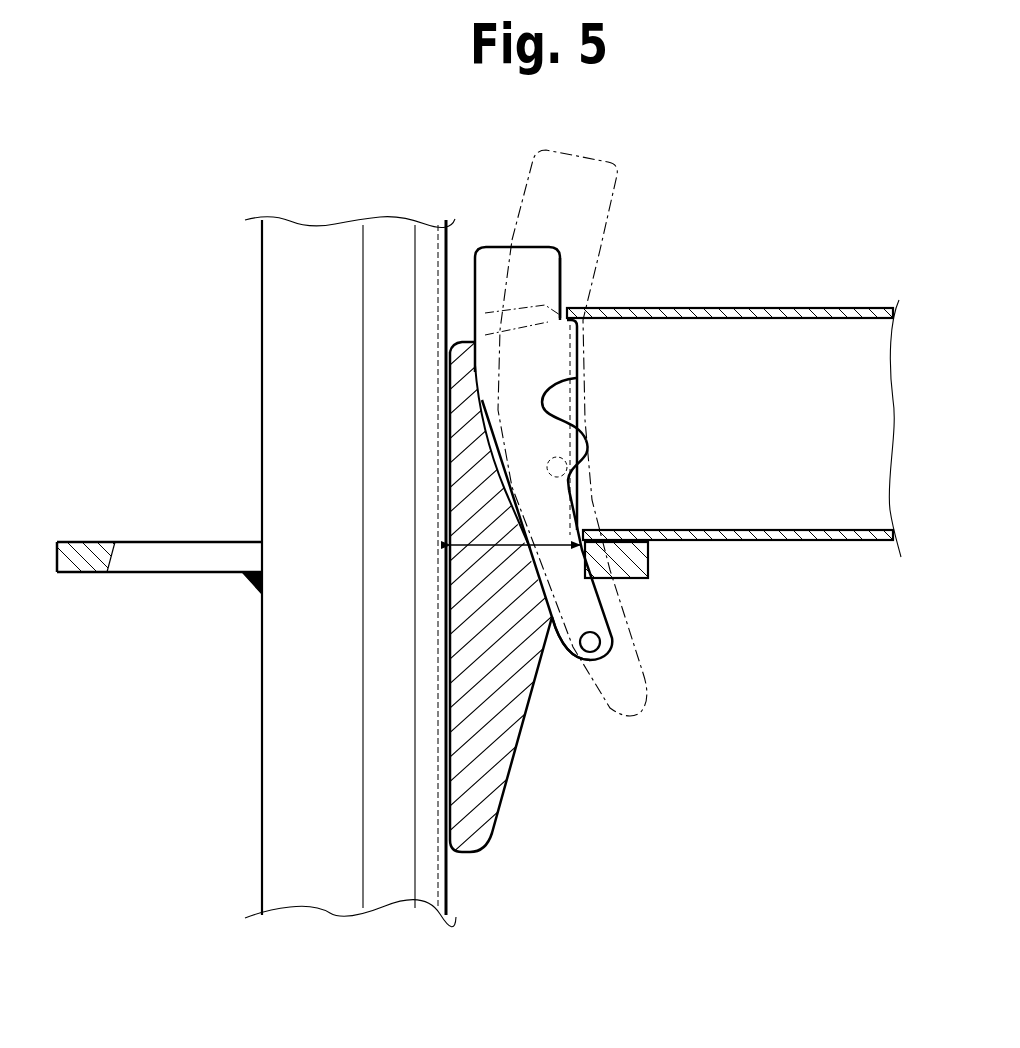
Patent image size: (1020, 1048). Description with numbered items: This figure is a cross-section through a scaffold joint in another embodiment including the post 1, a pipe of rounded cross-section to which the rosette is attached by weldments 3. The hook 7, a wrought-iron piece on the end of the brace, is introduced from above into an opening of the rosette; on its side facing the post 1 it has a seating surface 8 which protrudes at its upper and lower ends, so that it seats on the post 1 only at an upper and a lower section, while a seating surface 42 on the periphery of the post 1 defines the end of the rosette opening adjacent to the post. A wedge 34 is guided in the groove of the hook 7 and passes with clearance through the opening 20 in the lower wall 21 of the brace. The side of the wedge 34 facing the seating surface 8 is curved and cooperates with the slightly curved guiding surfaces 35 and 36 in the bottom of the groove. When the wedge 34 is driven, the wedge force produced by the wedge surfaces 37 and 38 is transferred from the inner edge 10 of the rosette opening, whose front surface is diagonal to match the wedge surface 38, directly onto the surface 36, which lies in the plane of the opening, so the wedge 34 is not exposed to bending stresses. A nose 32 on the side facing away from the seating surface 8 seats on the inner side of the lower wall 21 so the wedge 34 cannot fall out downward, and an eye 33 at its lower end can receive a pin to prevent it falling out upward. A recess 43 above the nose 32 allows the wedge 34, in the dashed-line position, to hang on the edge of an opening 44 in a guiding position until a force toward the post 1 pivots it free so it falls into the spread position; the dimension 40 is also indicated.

The post 1 is at (313, 838).
The weldments 3 is at (257, 580).
The hook 7 is at (500, 730).
The seating surface 8 is at (446, 642).
The inner edge 10 is at (592, 574).
The opening in the lower wall 20 is at (583, 540).
The lower wall 21 is at (812, 542).
The nose 32 is at (587, 452).
The eye 33 is at (612, 650).
The wedge 34 is at (616, 630).
The guiding surface 35 is at (484, 364).
The guiding surface 36 is at (566, 497).
The wedge surface 37 is at (557, 652).
The wedge surface 38 is at (593, 642).
The distance 40 is at (515, 531).
The seating surface 42 is at (456, 597).
The recess 43 is at (553, 410).
The opening 44 is at (565, 304).